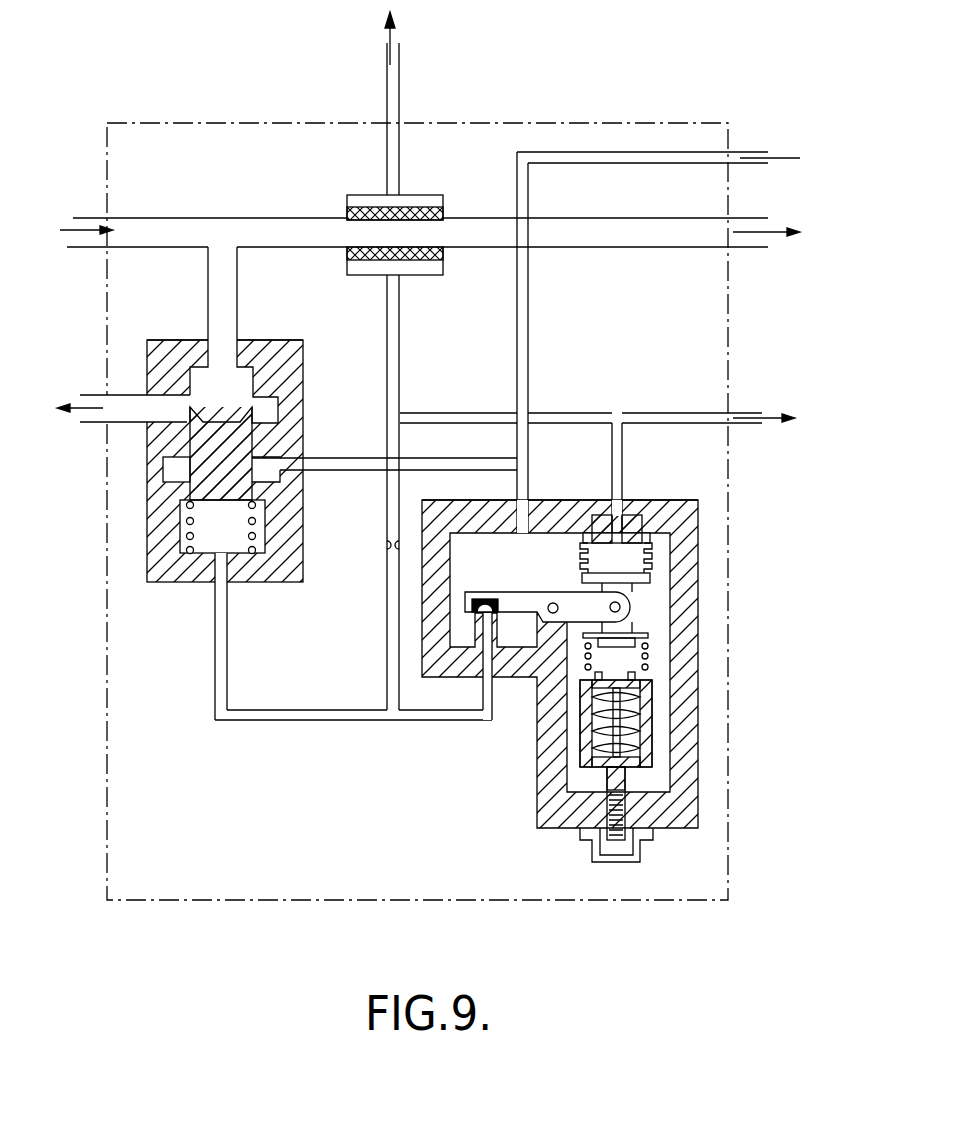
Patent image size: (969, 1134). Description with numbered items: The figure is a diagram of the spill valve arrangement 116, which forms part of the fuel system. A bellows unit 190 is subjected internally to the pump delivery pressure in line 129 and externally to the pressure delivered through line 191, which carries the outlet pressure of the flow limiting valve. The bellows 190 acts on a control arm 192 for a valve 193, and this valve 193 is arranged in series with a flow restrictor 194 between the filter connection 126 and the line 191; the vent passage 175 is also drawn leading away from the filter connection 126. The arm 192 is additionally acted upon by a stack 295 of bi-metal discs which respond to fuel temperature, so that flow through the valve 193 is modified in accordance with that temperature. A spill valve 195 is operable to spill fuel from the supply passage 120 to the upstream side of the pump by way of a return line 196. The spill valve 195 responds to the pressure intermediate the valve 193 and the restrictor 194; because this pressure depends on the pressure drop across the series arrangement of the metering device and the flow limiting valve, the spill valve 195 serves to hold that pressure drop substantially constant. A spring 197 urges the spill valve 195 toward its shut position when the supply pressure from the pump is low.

The spill valve arrangement 116 is at (233, 862).
The supply passage 120 is at (595, 233).
The filter connection 126 is at (417, 202).
The vent pipe 175 is at (390, 90).
The line 191 is at (735, 163).
The line 129 is at (733, 418).
The bellows unit 190 is at (612, 563).
The control arm 192 is at (515, 603).
The valve 193 is at (502, 630).
The flow restrictor 194 is at (388, 545).
The spill valve 195 is at (208, 487).
The return line 196 is at (108, 405).
The spring 197 is at (258, 538).
The stack of bi-metal discs 295 is at (668, 716).